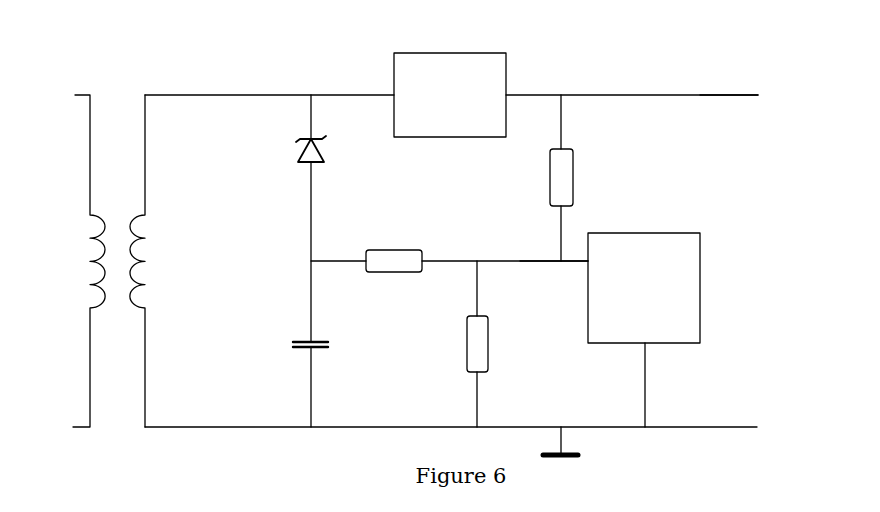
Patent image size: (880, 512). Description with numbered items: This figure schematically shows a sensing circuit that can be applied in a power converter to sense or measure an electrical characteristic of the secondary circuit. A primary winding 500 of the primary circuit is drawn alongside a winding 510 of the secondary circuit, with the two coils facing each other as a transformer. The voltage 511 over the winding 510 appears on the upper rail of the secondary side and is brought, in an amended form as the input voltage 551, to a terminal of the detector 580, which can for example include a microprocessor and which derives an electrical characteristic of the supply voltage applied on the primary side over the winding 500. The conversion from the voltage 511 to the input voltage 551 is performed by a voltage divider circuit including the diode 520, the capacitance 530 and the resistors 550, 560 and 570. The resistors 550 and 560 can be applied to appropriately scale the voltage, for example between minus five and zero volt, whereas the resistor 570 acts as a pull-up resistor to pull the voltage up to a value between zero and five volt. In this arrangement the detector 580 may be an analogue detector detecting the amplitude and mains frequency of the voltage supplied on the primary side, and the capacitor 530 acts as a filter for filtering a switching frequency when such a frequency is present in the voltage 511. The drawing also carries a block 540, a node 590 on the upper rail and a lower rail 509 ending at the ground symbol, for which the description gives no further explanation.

The primary winding 500 is at (82, 261).
The winding 510 is at (157, 261).
The voltage 511 is at (207, 92).
The diode 520 is at (290, 150).
The capacitance 530 is at (290, 342).
The load circuit block 540 is at (392, 88).
The resistor 550 is at (393, 248).
The input voltage 551 is at (582, 268).
The resistor 560 is at (458, 358).
The pull-up resistor 570 is at (578, 178).
The detector 580 is at (715, 288).
The output node 590 is at (763, 95).
The ground rail 509 is at (763, 427).